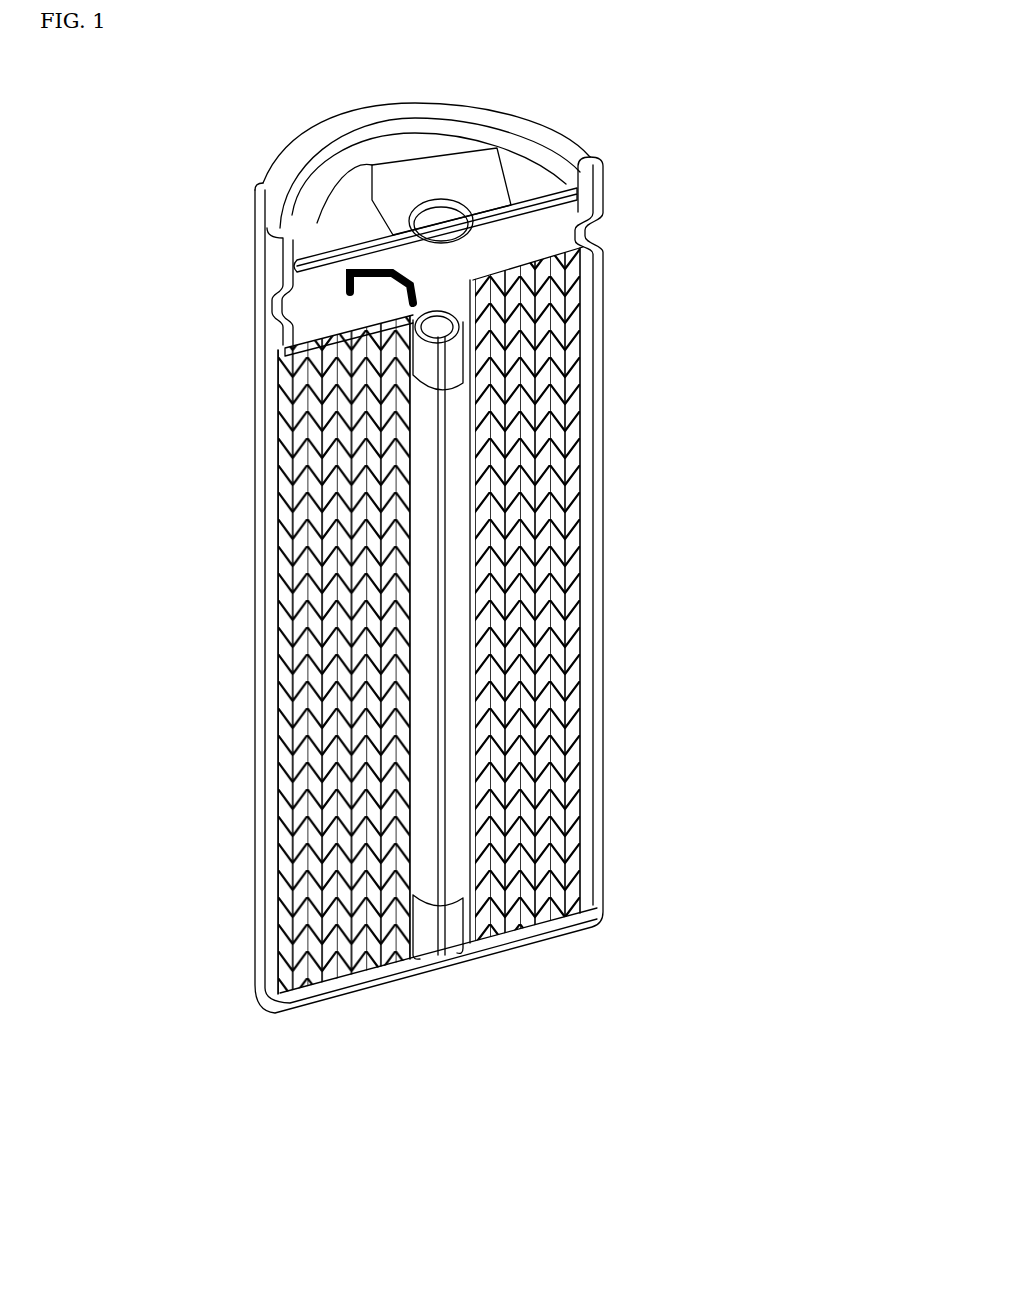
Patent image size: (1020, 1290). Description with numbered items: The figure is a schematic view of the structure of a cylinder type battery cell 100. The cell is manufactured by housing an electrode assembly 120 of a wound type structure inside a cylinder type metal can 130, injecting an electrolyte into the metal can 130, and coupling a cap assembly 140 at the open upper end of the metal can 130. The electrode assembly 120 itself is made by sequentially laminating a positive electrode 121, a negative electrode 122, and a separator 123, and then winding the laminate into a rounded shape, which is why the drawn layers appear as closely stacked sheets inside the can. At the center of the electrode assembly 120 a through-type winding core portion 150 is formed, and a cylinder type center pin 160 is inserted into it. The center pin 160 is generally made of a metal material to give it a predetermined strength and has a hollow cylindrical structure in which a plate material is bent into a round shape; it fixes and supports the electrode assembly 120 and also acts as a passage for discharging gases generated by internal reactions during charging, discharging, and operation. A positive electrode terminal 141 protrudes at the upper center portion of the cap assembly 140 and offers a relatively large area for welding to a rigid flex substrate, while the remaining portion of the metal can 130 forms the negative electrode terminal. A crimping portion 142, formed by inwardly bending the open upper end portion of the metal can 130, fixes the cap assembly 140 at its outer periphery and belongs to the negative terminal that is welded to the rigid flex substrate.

The cylinder type battery cell 100 is at (172, 137).
The electrode assembly 120 is at (521, 711).
The positive electrode 121 is at (557, 898).
The negative electrode 122 is at (537, 900).
The separator 123 is at (437, 689).
The metal can 130 is at (605, 513).
The cap assembly 140 is at (614, 150).
The positive electrode terminal 141 is at (432, 162).
The crimping portion 142 is at (262, 186).
The winding core portion 150 is at (408, 632).
The center pin 160 is at (432, 578).